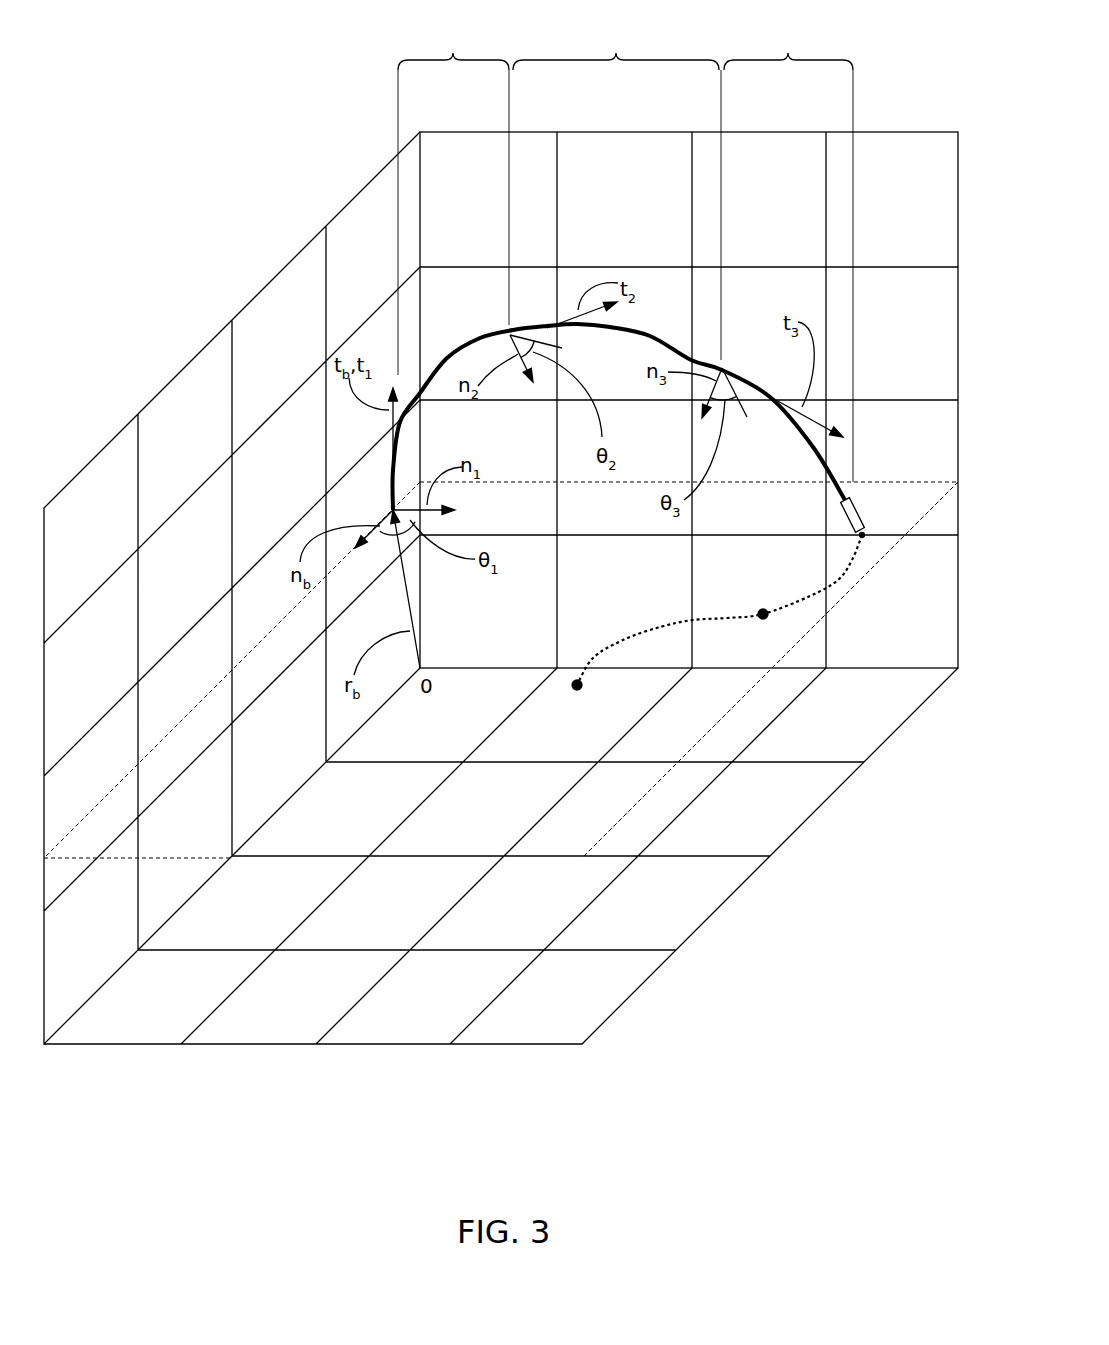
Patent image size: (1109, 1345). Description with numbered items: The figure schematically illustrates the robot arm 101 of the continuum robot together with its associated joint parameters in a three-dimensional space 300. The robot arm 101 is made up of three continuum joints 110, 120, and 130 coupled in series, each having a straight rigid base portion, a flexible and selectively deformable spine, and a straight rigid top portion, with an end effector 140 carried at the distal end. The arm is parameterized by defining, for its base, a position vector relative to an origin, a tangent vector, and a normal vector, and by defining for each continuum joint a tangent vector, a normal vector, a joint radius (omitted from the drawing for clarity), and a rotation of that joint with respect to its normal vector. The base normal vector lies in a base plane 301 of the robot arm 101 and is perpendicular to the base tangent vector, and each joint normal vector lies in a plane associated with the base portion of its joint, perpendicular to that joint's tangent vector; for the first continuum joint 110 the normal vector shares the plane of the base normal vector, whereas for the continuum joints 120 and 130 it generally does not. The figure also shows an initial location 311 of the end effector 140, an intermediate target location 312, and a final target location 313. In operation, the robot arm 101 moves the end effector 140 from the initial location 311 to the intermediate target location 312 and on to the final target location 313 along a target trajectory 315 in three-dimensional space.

The three-dimensional space 300 is at (262, 150).
The continuum joint 110 is at (453, 53).
The continuum joint 120 is at (616, 53).
The continuum joint 130 is at (788, 53).
The end effector 140 is at (857, 501).
The robot arm 101 is at (815, 448).
The initial location 311 is at (880, 528).
The intermediate target location 312 is at (748, 603).
The final target location 313 is at (594, 699).
The target trajectory 315 is at (660, 627).
The base plane 301 is at (838, 605).